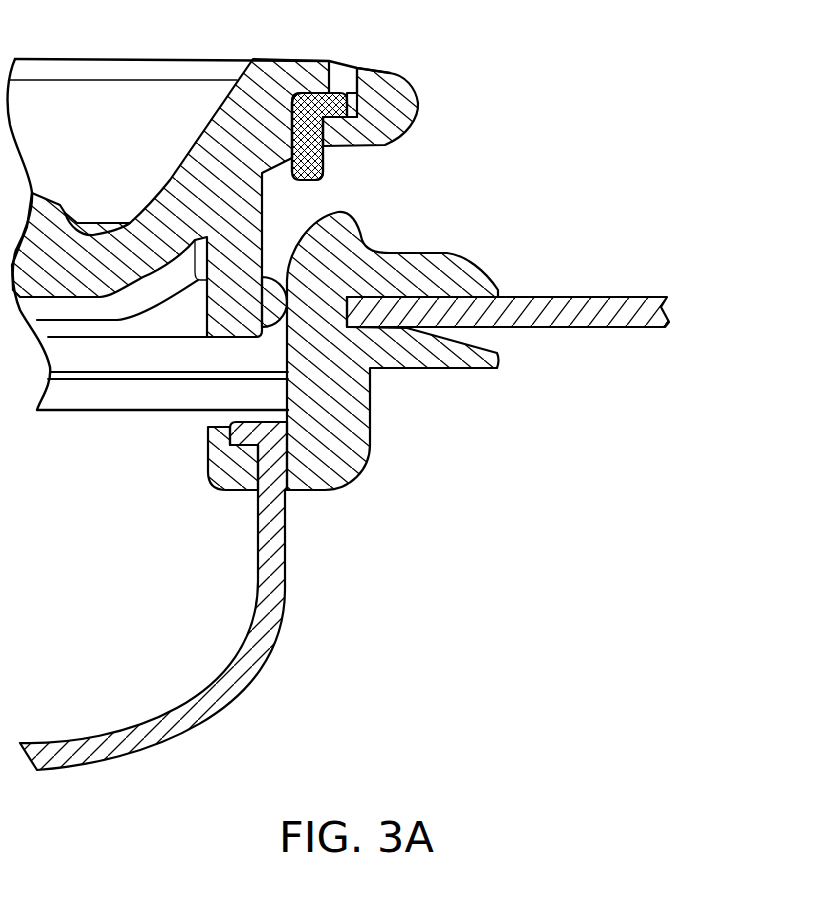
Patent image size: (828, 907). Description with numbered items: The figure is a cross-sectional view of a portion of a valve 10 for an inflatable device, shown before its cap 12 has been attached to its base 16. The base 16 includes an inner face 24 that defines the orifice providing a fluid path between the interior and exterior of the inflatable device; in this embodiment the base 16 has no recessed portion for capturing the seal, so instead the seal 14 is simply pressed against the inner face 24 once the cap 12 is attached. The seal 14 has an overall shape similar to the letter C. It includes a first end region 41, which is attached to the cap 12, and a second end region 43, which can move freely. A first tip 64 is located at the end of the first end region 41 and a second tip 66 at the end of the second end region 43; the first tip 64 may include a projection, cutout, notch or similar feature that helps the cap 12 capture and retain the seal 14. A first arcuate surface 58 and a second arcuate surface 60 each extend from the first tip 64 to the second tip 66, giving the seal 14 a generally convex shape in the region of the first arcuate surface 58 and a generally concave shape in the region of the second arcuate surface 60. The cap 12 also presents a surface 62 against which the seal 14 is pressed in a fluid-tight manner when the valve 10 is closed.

The valve 10 is at (445, 451).
The cap 12 is at (437, 68).
The seal 14 is at (345, 112).
The base 16 is at (486, 264).
The inner face 24 is at (304, 234).
The first end region 41 is at (360, 68).
The second end region 43 is at (328, 168).
The first arcuate surface 58 is at (291, 98).
The second arcuate surface 60 is at (326, 156).
The surface 62 is at (297, 137).
The first tip 64 is at (354, 110).
The second tip 66 is at (347, 198).